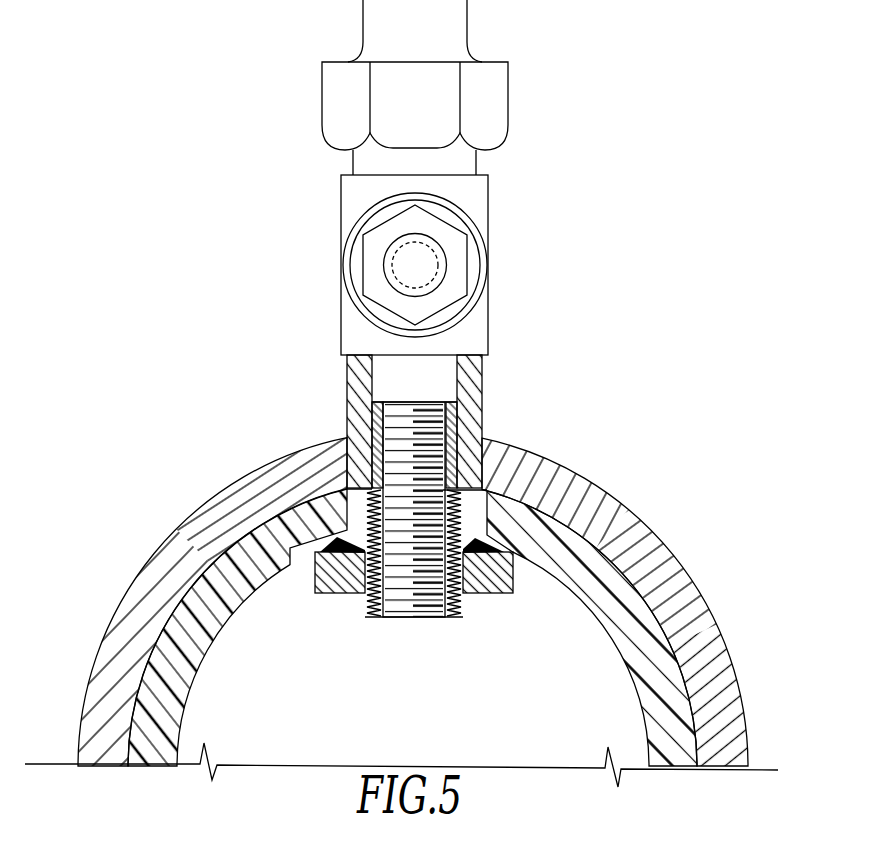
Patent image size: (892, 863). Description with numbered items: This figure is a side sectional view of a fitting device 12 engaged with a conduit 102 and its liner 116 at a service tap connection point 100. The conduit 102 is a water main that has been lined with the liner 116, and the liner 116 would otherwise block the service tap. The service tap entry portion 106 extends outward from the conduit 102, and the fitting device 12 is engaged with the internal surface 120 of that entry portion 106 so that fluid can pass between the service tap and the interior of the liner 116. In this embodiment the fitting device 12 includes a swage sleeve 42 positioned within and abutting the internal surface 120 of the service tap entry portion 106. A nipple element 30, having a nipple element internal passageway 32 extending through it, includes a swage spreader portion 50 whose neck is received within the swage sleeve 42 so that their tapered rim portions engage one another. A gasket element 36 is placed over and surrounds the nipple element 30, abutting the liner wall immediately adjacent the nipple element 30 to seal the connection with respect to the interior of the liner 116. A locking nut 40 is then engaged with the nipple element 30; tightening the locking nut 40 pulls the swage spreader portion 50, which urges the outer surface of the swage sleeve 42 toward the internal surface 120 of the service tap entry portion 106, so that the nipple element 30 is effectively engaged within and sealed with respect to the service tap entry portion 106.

The fitting device 12 is at (306, 583).
The nipple element 30 is at (486, 511).
The nipple element internal passageway 32 is at (397, 512).
The gasket element 36 is at (481, 560).
The locking nut 40 is at (513, 577).
The swage sleeve 42 is at (452, 406).
The swage spreader portion 50 is at (448, 454).
The service tap connection point 100 is at (322, 243).
The conduit 102 is at (660, 543).
The service tap entry portion 106 is at (468, 371).
The liner 116 is at (625, 652).
The internal surface 120 is at (373, 367).